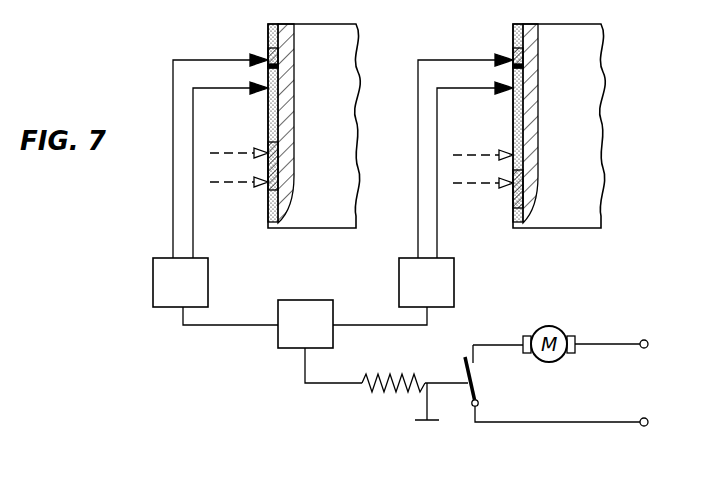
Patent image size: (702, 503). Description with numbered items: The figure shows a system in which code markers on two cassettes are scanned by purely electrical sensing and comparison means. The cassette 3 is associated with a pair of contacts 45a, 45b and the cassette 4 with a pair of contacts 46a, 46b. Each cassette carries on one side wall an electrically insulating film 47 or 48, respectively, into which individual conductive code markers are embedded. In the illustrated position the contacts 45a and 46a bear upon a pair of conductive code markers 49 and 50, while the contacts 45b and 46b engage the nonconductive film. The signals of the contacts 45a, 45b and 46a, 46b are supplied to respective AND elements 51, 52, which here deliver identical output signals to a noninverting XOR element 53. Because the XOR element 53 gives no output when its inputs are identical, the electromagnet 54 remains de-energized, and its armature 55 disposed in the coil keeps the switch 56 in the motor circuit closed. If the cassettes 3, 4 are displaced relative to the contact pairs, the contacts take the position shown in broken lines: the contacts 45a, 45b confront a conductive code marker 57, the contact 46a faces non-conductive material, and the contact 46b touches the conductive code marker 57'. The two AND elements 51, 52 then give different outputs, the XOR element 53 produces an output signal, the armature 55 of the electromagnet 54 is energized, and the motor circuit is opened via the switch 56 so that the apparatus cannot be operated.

The cassette 3 is at (347, 131).
The cassette 4 is at (592, 128).
The contact 45a is at (258, 54).
The contact 45b is at (259, 96).
The contact 46a is at (503, 54).
The contact 46b is at (504, 96).
The electrically insulating film 47 is at (268, 210).
The electrically insulating film 48 is at (513, 215).
The conductive code marker 49 is at (283, 52).
The conductive code marker 50 is at (528, 52).
The AND element 51 is at (191, 294).
The AND element 52 is at (438, 294).
The XOR element 53 is at (316, 335).
The electromagnet 54 is at (393, 370).
The armature 55 is at (440, 381).
The switch 56 is at (472, 376).
The conductive code marker 57 is at (297, 166).
The conductive code marker 57' is at (545, 189).